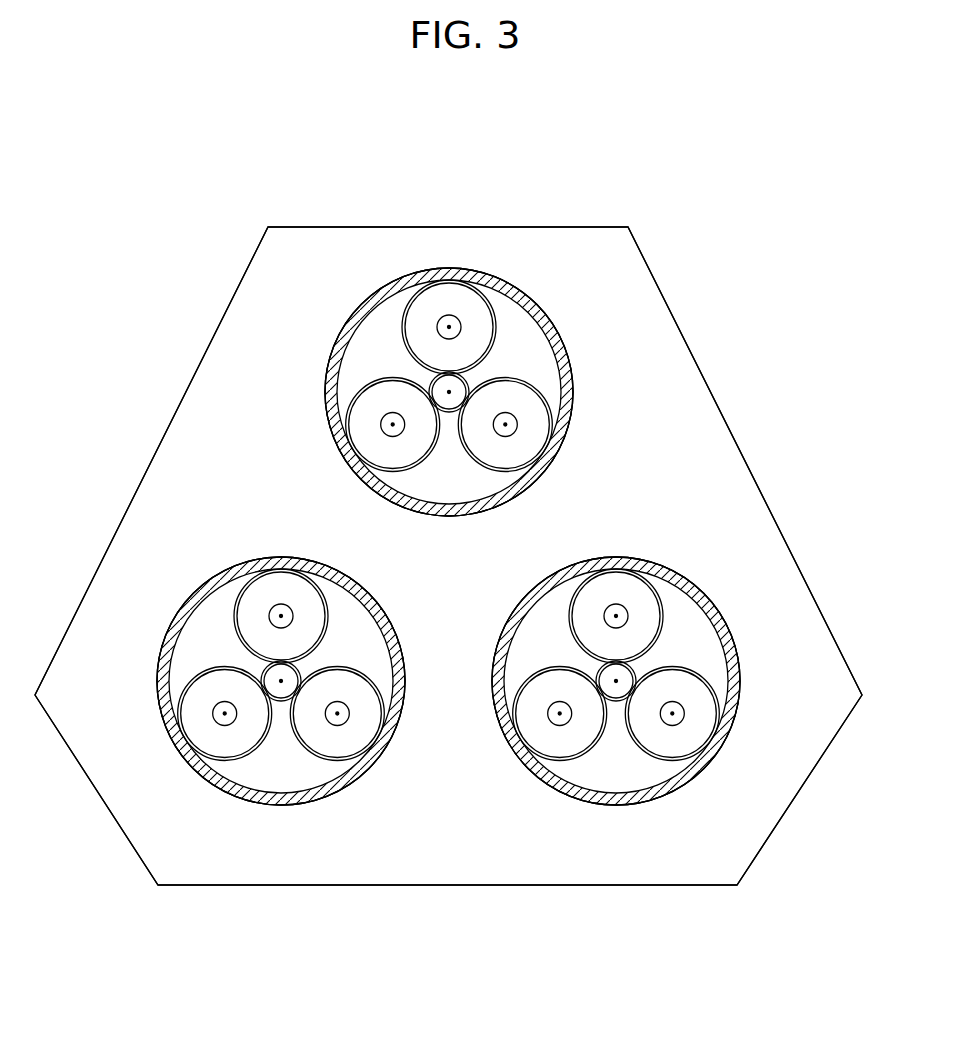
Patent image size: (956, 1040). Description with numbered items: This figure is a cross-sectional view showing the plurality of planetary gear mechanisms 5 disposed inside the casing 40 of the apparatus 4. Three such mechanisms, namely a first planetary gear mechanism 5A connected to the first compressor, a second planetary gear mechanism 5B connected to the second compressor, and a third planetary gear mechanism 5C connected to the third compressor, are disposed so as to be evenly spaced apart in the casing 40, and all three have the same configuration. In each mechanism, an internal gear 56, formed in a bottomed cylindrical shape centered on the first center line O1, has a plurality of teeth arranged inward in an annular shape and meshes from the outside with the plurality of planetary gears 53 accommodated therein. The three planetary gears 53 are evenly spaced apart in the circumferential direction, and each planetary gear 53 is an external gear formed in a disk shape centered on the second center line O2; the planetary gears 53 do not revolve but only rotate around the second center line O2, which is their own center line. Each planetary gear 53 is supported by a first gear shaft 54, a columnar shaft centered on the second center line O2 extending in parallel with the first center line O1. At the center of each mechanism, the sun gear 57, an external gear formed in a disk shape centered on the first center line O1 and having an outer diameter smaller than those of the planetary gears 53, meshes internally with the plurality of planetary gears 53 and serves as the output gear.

The cable (multi-core optical cable) 4 is at (602, 180).
The casing 40 is at (345, 226).
The planetary gear mechanism 5 is at (448, 536).
The first planetary gear mechanism 5A is at (549, 306).
The second planetary gear mechanism 5B is at (680, 795).
The third planetary gear mechanism 5C is at (347, 795).
The planetary gear 53 is at (406, 312).
The first gear shaft 54 is at (438, 334).
The internal gear 56 is at (549, 318).
The sun gear 57 is at (556, 361).
The first center line O1 is at (449, 392).
The second center line O2 is at (452, 325).